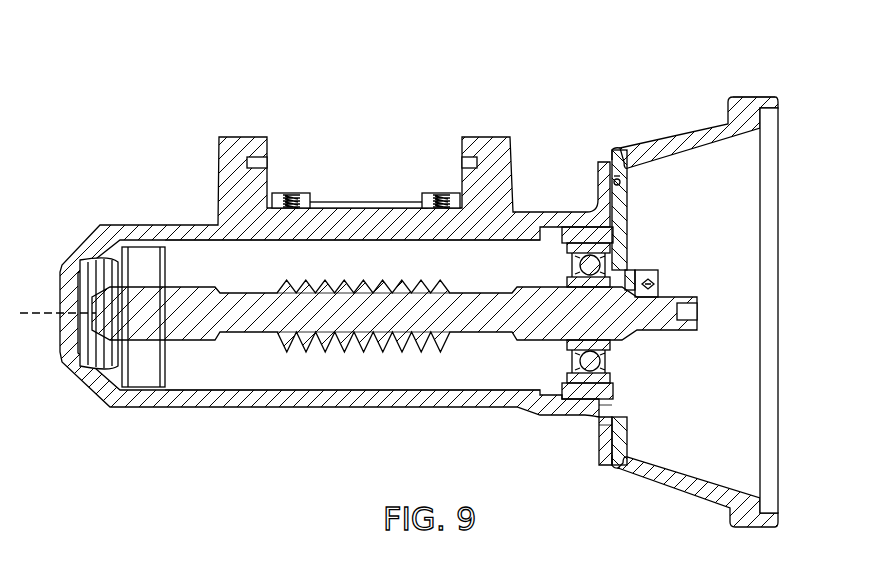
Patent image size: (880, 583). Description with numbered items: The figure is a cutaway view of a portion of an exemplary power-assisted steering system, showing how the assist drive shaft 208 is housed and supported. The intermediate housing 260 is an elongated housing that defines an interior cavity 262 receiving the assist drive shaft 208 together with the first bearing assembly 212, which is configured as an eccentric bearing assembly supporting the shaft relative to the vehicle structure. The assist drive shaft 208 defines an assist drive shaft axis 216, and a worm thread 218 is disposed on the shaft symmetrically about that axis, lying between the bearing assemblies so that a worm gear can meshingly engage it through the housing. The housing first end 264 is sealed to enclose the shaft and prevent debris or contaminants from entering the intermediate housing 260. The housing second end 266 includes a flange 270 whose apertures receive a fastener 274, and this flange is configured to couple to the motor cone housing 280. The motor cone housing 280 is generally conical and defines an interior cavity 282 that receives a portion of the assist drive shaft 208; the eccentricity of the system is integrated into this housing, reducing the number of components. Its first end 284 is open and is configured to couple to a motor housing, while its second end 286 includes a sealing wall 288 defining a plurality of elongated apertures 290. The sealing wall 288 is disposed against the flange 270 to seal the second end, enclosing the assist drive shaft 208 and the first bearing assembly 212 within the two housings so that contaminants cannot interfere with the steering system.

The assist drive shaft 208 is at (205, 334).
The first bearing assembly 212 is at (558, 392).
The assist drive shaft axis 216 is at (56, 313).
The worm thread 218 is at (370, 281).
The intermediate housing 260 is at (318, 404).
The interior cavity 262 is at (273, 376).
The first end 264 is at (84, 231).
The second end 266 is at (578, 182).
The flange 270 is at (614, 452).
The fastener 274 is at (652, 279).
The motor cone housing 280 is at (703, 119).
The interior cavity 282 is at (745, 392).
The first end 284 is at (762, 95).
The second end 286 is at (612, 152).
The sealing wall 288 is at (600, 418).
The elongated apertures 290 is at (619, 178).